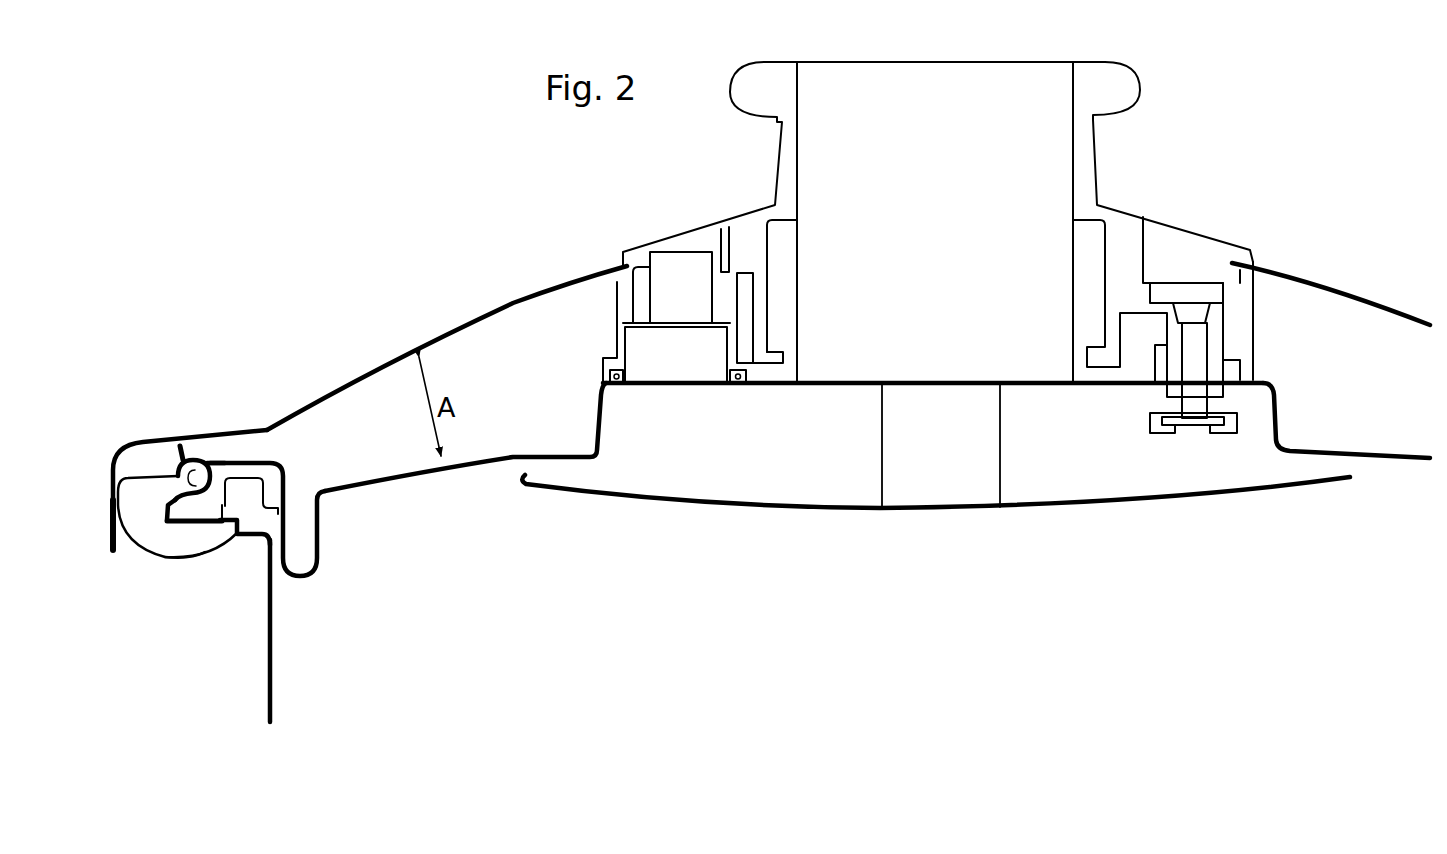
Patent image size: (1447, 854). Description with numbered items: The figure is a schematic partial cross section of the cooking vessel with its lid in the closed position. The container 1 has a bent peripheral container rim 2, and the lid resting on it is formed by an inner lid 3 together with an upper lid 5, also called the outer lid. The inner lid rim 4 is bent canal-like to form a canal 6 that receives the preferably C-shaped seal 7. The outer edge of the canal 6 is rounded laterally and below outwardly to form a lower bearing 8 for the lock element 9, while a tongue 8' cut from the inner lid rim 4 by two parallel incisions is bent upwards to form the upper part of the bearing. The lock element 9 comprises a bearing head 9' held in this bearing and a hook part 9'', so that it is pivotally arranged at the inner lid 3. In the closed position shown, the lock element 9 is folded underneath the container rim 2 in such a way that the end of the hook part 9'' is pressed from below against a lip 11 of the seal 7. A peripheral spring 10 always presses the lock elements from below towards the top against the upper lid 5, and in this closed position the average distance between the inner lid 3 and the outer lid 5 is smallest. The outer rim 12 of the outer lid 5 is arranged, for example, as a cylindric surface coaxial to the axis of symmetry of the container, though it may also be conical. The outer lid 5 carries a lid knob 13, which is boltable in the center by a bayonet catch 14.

The container 1 is at (265, 705).
The container rim 2 is at (193, 527).
The inner lid 3 is at (428, 485).
The inner lid rim 4 is at (215, 452).
The upper lid 5 is at (447, 327).
The canal 6 is at (247, 490).
The seal 7 is at (268, 470).
The lower bearing 8 is at (180, 451).
The tongue 8' is at (157, 424).
The lock element 9 is at (172, 542).
The bearing head 9' is at (138, 465).
The hook part 9'' is at (194, 581).
The peripheral spring 10 is at (168, 508).
The lip 11 is at (233, 530).
The outer rim 12 is at (108, 538).
The lid knob 13 is at (757, 163).
The bayonet catch 14 is at (777, 337).